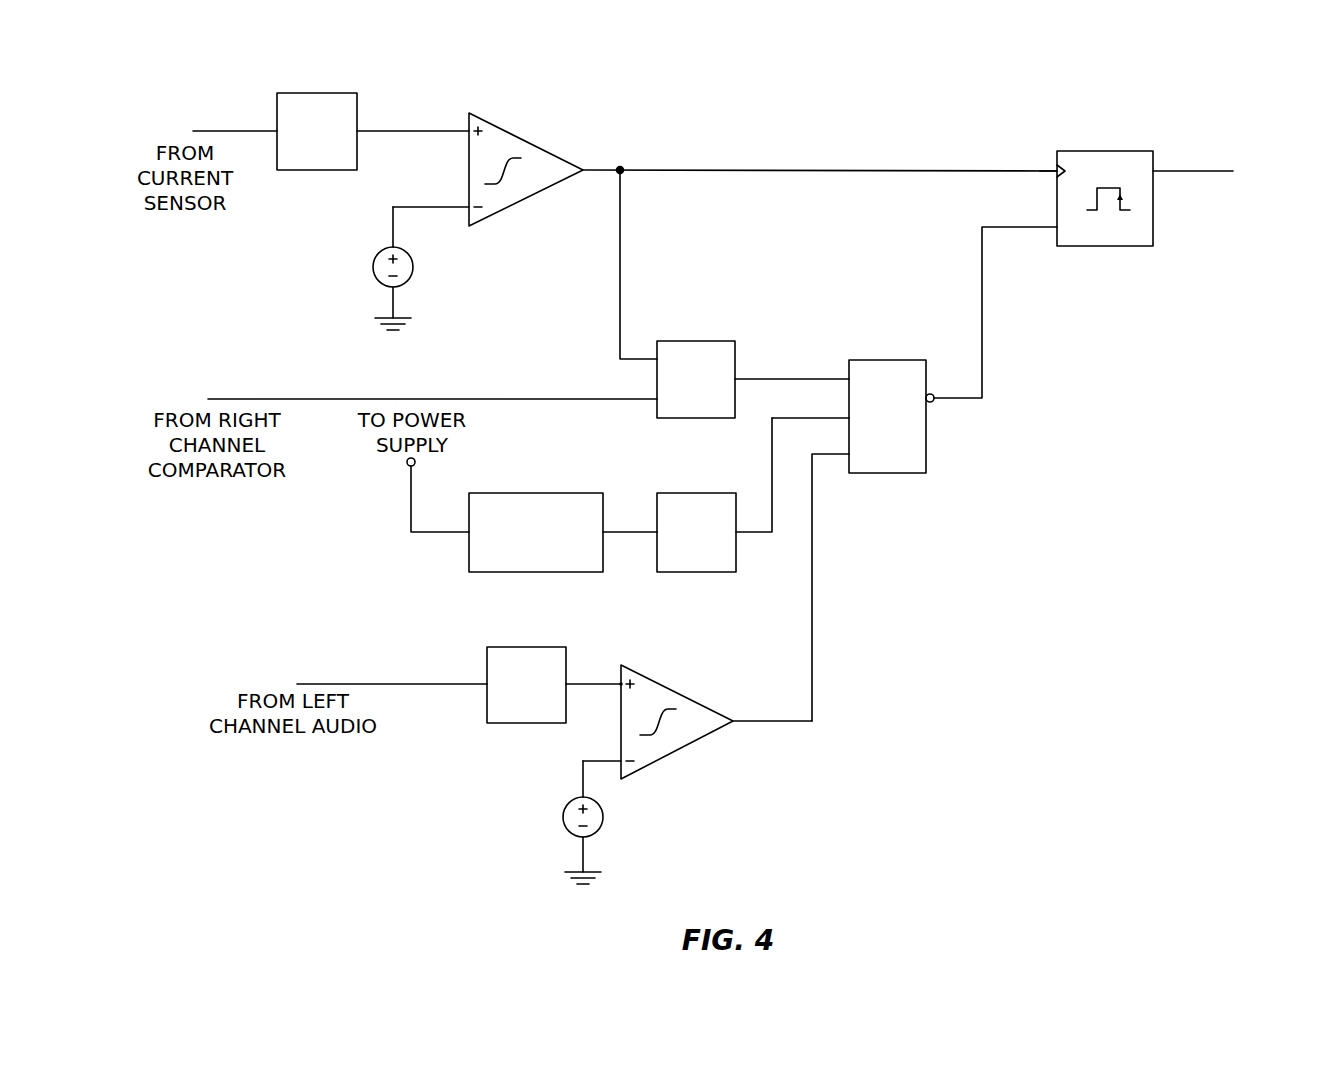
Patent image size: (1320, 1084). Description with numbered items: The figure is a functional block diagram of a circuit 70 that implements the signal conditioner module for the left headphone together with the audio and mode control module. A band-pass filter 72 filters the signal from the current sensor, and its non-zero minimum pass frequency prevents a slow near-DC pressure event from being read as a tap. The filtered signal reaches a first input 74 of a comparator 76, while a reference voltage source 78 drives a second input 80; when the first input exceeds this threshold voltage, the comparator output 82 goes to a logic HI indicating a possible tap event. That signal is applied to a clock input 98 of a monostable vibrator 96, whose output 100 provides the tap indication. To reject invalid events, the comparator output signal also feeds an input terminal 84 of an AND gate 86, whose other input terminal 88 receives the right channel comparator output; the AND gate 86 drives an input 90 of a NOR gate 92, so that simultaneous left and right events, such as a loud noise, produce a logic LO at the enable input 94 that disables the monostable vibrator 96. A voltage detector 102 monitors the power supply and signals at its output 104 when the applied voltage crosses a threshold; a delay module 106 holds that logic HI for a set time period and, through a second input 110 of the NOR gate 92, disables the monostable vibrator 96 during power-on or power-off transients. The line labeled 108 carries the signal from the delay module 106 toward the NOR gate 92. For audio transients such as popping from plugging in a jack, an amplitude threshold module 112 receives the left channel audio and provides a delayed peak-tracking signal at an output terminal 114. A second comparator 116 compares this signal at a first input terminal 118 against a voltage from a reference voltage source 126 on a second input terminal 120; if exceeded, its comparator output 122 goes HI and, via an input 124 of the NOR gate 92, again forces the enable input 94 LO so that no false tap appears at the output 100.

The circuit 70 is at (1188, 496).
The band-pass filter 72 is at (320, 93).
The first input 74 is at (469, 131).
The comparator 76 is at (503, 128).
The reference voltage source 78 is at (373, 266).
The second input 80 is at (469, 212).
The comparator output 82 is at (583, 170).
The input terminal 84 is at (657, 360).
The AND gate 86 is at (696, 379).
The other input terminal 88 is at (660, 400).
The input 90 is at (850, 380).
The NOR gate 92 is at (891, 416).
The enable input 94 is at (1060, 235).
The monostable vibrator 96 is at (1108, 151).
The clock input 98 is at (1057, 171).
The output 100 is at (1153, 172).
The voltage detector 102 is at (505, 515).
The output 104 is at (603, 532).
The delay module 106 is at (696, 532).
The output of block 106 108 is at (736, 533).
The second input 110 is at (849, 418).
The amplitude threshold module 112 is at (431, 685).
The output terminal 114 is at (566, 684).
The comparator 116 is at (680, 695).
The first input terminal 118 is at (621, 684).
The second input terminal 120 is at (621, 762).
The comparator output 122 is at (733, 721).
The input 124 is at (849, 455).
The reference voltage source 126 is at (565, 818).